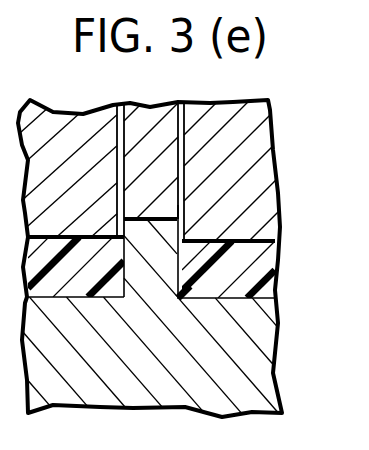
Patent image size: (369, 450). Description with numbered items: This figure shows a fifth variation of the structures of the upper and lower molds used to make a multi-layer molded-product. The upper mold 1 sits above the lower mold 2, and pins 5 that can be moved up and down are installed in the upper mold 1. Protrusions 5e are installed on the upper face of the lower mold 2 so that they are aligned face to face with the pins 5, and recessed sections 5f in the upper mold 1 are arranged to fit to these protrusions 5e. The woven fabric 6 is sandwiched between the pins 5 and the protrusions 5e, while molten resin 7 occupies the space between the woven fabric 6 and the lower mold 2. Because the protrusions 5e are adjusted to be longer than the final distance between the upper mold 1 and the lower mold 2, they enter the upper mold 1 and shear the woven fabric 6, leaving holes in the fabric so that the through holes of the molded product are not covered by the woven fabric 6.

The upper mold 1 is at (268, 138).
The lower mold 2 is at (252, 368).
The pins 5 is at (164, 131).
The protrusions 5e is at (147, 283).
The recessed sections 5f is at (248, 185).
The woven fabric 6 is at (237, 234).
The molten resin 7 is at (260, 267).